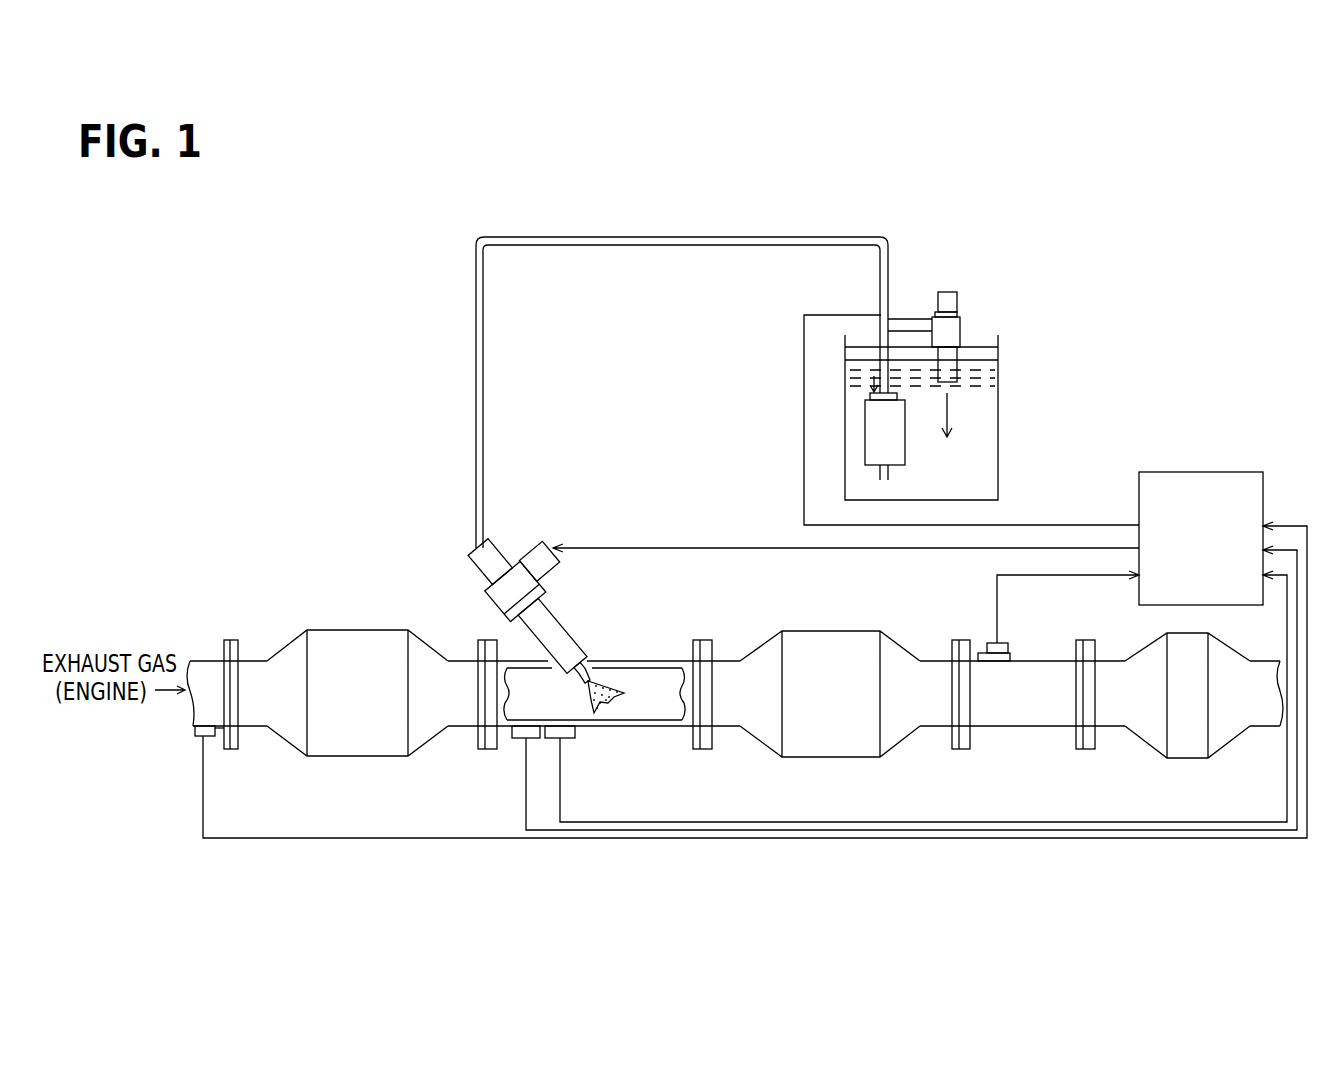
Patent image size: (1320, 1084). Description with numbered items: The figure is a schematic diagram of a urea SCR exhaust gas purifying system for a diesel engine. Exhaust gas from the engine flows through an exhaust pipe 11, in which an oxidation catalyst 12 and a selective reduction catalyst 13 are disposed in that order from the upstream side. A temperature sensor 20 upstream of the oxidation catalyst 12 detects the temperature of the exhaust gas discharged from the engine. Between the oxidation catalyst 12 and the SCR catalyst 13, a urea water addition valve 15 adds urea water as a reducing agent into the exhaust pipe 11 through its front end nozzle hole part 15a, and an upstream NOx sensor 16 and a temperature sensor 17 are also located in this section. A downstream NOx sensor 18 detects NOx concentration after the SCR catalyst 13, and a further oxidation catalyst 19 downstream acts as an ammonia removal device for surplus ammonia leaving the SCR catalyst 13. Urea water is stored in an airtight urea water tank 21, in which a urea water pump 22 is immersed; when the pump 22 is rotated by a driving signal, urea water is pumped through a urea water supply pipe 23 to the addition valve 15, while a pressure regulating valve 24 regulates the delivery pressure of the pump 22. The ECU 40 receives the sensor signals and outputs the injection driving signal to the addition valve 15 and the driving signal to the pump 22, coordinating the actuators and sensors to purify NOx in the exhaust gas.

The exhaust pipe 11 is at (648, 725).
The oxidation catalyst 12 is at (357, 631).
The selective reduction catalyst 13 is at (832, 632).
The urea water addition valve 15 is at (496, 550).
The front end nozzle hole part 15a is at (600, 678).
The NOx sensor 16 is at (513, 742).
The temperature sensor 17 is at (570, 740).
The NOx sensor 18 is at (1005, 654).
The oxidation catalyst 19 is at (1187, 758).
The temperature sensor 20 is at (200, 737).
The urea water tank 21 is at (999, 478).
The urea water pump 22 is at (865, 433).
The urea water supply pipe 23 is at (537, 237).
The pressure regulating valve 24 is at (962, 332).
The ECU 40 is at (1200, 472).